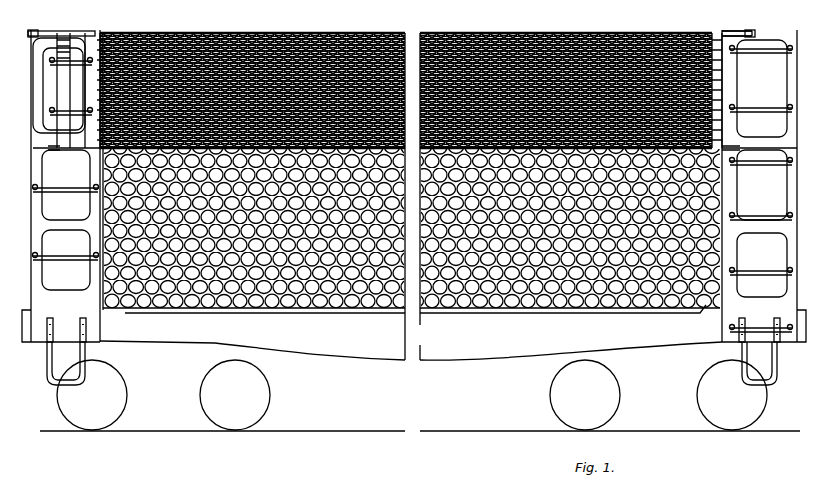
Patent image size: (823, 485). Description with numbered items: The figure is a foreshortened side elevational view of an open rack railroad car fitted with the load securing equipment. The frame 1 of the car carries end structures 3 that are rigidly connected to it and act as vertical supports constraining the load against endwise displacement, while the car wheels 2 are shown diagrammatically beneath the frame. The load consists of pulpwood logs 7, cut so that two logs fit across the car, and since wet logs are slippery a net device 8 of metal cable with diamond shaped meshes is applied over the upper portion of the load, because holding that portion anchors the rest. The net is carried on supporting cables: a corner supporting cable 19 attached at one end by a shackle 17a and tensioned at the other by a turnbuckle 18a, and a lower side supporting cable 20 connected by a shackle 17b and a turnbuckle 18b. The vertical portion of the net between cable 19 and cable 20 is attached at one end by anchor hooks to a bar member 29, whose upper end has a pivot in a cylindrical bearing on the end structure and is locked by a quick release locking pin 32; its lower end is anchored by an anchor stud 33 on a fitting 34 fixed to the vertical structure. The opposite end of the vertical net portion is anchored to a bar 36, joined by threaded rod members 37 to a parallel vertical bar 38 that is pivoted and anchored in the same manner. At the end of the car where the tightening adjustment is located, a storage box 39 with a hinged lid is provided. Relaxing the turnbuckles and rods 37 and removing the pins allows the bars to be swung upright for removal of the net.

The frame of the car 1 is at (455, 354).
The car wheels 2 is at (270, 395).
The end structure 3 is at (32, 114).
The logs 7 is at (537, 270).
The net device 8 is at (610, 33).
The shackle 17a is at (706, 31).
The shackle 17b is at (737, 170).
The turnbuckle 18a is at (103, 33).
The turnbuckle 18b is at (92, 152).
The corner supporting cable 19 is at (528, 33).
The lower side supporting cable 20 is at (735, 196).
The bar member 29 is at (735, 78).
The quick release locking pin 32 is at (724, 38).
The anchor stud 33 is at (50, 147).
The fitting 34 is at (735, 145).
The bar 36 is at (81, 33).
The threaded rod members 37 is at (86, 105).
The parallel vertical bar 38 is at (62, 97).
The storage box 39 is at (52, 72).